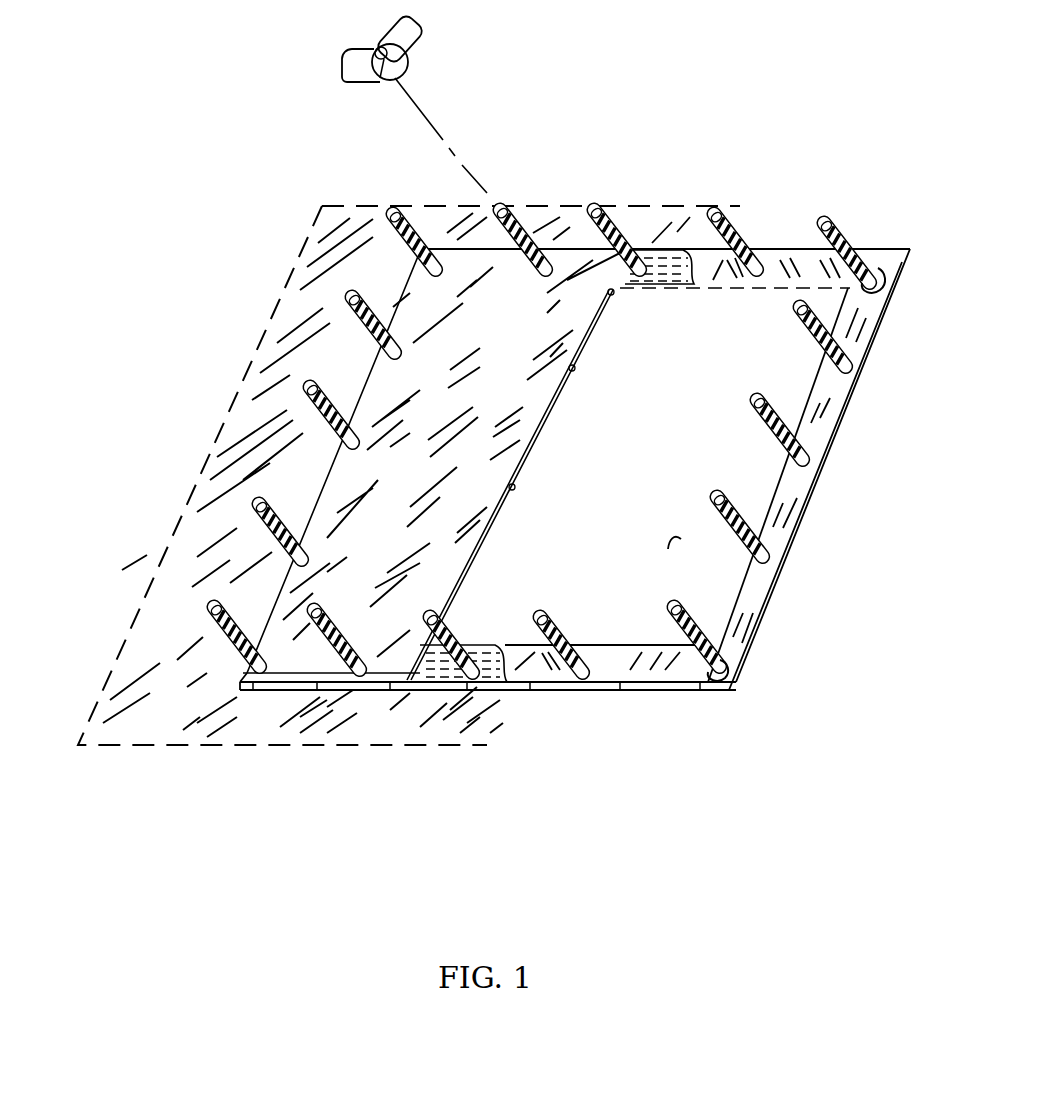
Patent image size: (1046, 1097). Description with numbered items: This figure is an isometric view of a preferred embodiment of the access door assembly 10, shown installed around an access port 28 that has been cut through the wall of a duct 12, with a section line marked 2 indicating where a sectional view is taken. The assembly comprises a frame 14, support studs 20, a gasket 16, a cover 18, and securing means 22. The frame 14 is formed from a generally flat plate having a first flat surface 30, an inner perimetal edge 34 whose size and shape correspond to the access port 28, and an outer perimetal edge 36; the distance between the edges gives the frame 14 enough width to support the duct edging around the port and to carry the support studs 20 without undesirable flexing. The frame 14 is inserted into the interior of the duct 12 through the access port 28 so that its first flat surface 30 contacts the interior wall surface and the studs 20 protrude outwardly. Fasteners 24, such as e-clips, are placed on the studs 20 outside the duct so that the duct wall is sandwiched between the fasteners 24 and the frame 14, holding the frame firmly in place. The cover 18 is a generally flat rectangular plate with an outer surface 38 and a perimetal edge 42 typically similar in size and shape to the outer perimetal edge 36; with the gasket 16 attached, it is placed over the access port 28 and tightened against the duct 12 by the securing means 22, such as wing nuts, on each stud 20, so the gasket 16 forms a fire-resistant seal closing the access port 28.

The access door assembly 10 is at (494, 426).
The duct 12 is at (409, 475).
The frame 14 is at (503, 528).
The gasket 16 is at (455, 731).
The cover 18 is at (463, 446).
The support studs 20 is at (787, 194).
The securing means 22 is at (433, 103).
The fasteners 24 is at (875, 219).
The access port 28 is at (497, 688).
The first flat surface 30 is at (597, 700).
The inner perimetal edge 34 is at (602, 598).
The outer perimetal edge 36 is at (819, 469).
The outer surface 38 is at (387, 188).
The perimetal edge 42 is at (411, 735).
The section line 2- 2 is at (446, 474).